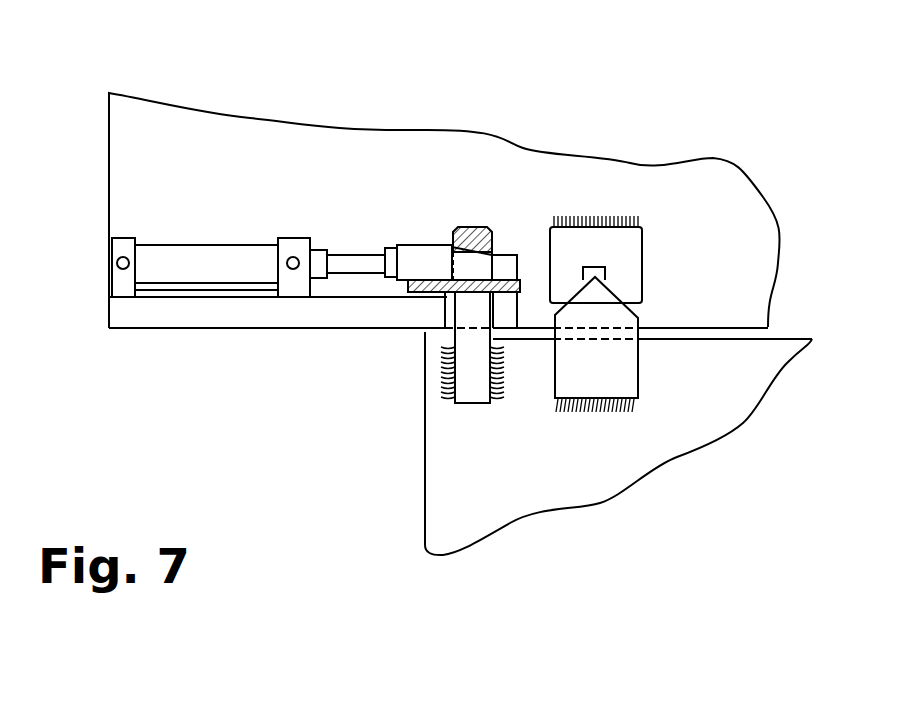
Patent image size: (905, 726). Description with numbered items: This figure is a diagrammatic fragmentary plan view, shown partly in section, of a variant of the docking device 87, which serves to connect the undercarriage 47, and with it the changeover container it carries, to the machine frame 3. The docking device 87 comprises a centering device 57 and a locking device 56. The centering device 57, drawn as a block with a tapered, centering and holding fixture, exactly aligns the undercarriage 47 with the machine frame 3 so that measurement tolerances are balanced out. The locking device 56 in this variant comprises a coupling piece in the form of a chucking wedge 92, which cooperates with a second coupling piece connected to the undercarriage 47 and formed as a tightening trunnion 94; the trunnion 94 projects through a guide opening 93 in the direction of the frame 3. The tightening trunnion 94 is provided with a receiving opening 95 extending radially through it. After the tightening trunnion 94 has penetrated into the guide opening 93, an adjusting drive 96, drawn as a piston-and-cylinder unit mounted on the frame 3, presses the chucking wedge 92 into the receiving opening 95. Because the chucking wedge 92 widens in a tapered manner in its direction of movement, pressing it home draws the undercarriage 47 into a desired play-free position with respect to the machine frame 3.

The frame 3 is at (190, 315).
The undercarriage 47 is at (495, 493).
The locking device 56 is at (350, 223).
The centering device 57 is at (658, 293).
The docking device 87 is at (397, 217).
The chucking wedge 92 is at (413, 262).
The guide opening 93 is at (474, 227).
The tightening trunnion 94 is at (470, 313).
The receiving opening 95 is at (498, 238).
The adjusting drive 96 is at (207, 255).